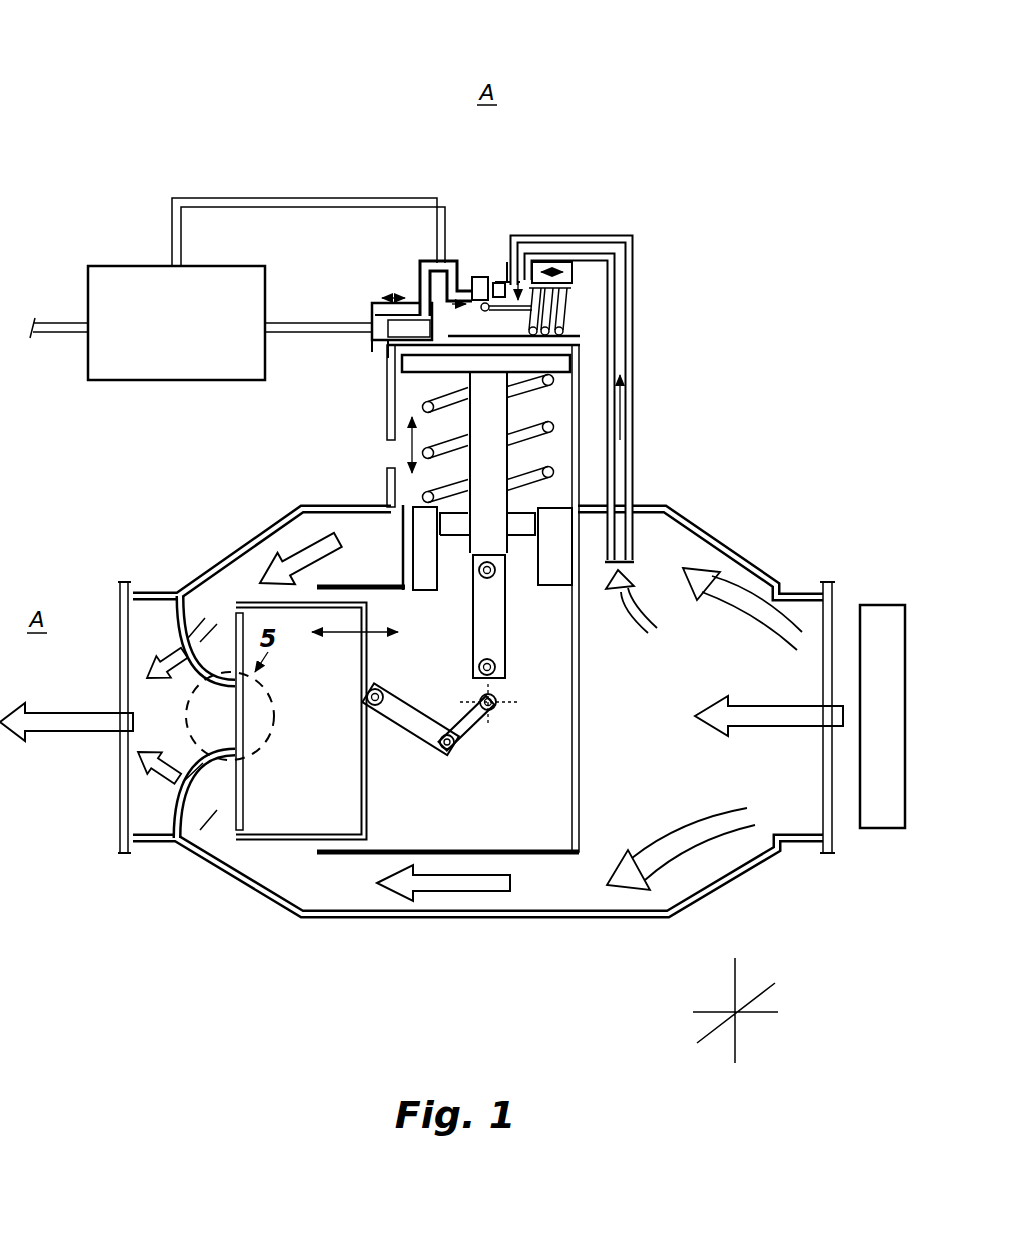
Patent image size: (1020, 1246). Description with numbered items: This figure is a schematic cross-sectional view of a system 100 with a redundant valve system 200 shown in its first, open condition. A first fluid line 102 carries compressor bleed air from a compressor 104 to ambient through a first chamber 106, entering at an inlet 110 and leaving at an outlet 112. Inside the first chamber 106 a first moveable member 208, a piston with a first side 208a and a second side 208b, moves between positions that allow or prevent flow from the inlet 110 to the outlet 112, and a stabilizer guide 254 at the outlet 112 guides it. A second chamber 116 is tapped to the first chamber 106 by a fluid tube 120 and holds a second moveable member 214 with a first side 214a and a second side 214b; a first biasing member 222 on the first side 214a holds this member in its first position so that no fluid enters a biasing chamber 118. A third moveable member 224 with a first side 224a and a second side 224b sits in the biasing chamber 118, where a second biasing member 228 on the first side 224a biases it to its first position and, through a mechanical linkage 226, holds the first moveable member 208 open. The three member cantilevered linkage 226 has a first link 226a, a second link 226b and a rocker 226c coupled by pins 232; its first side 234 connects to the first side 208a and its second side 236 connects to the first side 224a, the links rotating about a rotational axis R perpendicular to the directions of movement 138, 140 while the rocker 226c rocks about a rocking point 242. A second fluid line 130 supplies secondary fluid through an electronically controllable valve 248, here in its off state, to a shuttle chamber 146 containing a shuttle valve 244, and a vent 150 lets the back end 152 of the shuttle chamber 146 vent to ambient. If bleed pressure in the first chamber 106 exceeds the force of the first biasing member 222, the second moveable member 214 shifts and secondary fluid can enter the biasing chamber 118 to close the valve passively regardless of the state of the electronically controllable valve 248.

The system 100 is at (99, 150).
The first fluid line 102 is at (841, 552).
The compressor 104 is at (882, 620).
The first chamber 106 is at (606, 694).
The inlet 110 is at (805, 795).
The outlet 112 is at (137, 802).
The second chamber 116 is at (537, 330).
The biasing chamber 118 is at (556, 448).
The fluid tube 120 is at (633, 430).
The second fluid line 130 is at (199, 197).
The direction of movement 138 is at (330, 634).
The axial direction 140 is at (405, 446).
The shuttle chamber 146 is at (368, 340).
The vent 150 is at (477, 262).
The back end 152 is at (484, 288).
The valve system 200 is at (660, 242).
The first moveable member 208 is at (372, 668).
The first side 208a is at (374, 798).
The second side 208b is at (353, 745).
The second moveable member 214 is at (511, 275).
The first side 214a is at (553, 320).
The second side 214b is at (533, 307).
The first biasing member 222 is at (573, 288).
The third moveable member 224 is at (420, 368).
The first side 224a is at (465, 537).
The second side 224b is at (410, 356).
The mechanical linkage 226 is at (440, 679).
The first link 226a is at (380, 730).
The second link 226b is at (497, 627).
The rocker 226c is at (477, 741).
The second biasing member 228 is at (550, 474).
The pins 232 is at (478, 575).
The first side of the linkage 234 is at (365, 696).
The second side of the linkage 236 is at (499, 568).
The rocking point 242 is at (496, 709).
The shuttle valve 244 is at (417, 312).
The electronically controllable valve 248 is at (163, 339).
The stabilizer guide 254 is at (247, 793).
The rotational axis R is at (479, 697).